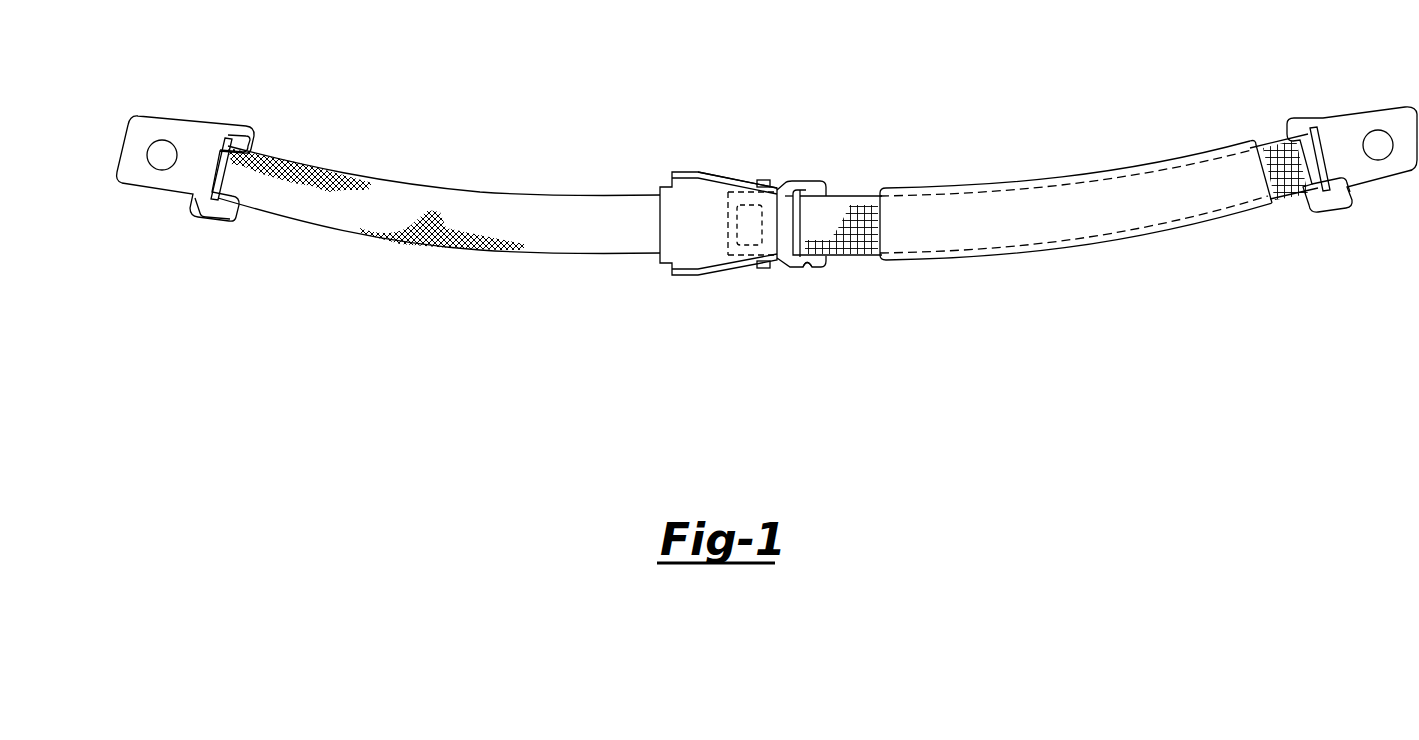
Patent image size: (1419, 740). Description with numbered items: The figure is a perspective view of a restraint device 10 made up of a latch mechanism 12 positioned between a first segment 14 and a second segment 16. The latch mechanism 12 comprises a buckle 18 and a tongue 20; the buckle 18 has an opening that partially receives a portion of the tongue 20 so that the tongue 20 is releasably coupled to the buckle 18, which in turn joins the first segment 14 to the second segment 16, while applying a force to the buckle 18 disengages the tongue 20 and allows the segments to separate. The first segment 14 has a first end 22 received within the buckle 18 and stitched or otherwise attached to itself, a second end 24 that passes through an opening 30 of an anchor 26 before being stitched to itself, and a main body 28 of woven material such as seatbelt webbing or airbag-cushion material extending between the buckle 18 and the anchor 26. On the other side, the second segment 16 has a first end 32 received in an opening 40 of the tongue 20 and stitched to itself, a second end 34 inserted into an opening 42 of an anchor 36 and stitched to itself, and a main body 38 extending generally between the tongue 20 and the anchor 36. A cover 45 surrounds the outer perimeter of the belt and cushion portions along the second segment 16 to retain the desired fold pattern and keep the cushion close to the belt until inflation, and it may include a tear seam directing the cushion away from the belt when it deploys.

The restraint device 10 is at (1046, 95).
The latch mechanism 12 is at (730, 283).
The first segment 14 is at (444, 180).
The second segment 16 is at (1180, 143).
The buckle 18 is at (699, 184).
The tongue 20 is at (818, 272).
The first end 22 is at (688, 200).
The second end 24 is at (226, 141).
The anchor 26 is at (188, 133).
The main body 28 is at (362, 214).
The opening 30 is at (207, 201).
The first end 32 is at (783, 192).
The second end 34 is at (1319, 134).
The anchor 36 is at (1357, 122).
The main body 38 is at (862, 257).
The opening 40 is at (809, 268).
The opening 42 is at (1348, 196).
The cover 45 is at (988, 187).